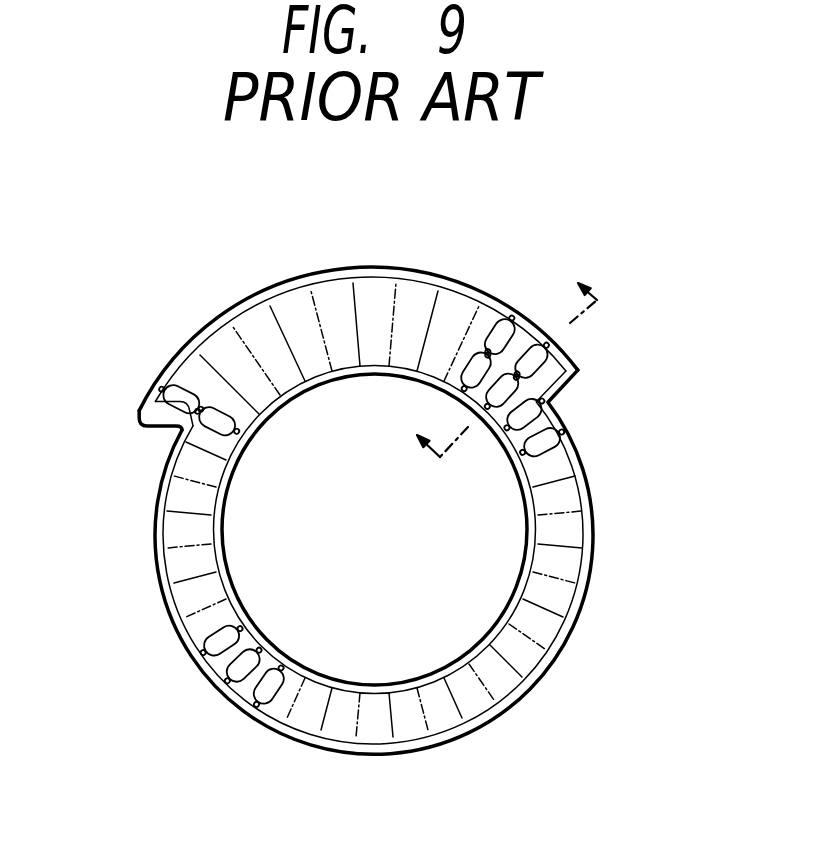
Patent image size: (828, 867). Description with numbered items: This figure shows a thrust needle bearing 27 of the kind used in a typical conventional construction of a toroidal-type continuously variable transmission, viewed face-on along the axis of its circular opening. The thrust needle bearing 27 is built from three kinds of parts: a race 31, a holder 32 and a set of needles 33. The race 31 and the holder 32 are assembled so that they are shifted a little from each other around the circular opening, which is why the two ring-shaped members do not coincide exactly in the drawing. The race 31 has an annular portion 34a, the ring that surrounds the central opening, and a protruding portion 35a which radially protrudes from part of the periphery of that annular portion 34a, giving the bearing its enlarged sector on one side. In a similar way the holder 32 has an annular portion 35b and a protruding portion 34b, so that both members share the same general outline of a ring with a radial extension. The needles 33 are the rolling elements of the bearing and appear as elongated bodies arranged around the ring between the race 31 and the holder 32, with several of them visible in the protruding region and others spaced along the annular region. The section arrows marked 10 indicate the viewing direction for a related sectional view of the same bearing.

The thrust needle bearing 27 is at (411, 253).
The race 31 is at (156, 418).
The holder 32 is at (527, 657).
The needles 33 is at (535, 350).
The annular portion 34a is at (577, 593).
The protruding portion 34b is at (565, 490).
The protruding portion 35a is at (320, 273).
The annular portion 35b is at (256, 328).
The section line 10 is at (486, 343).